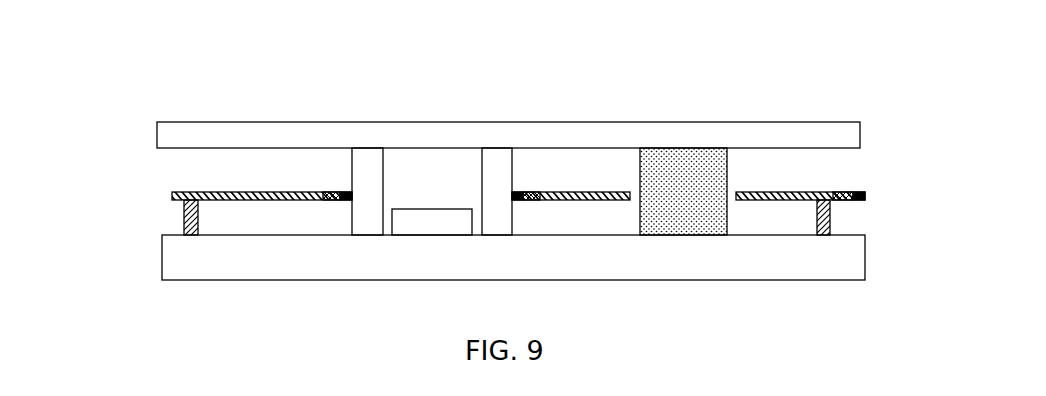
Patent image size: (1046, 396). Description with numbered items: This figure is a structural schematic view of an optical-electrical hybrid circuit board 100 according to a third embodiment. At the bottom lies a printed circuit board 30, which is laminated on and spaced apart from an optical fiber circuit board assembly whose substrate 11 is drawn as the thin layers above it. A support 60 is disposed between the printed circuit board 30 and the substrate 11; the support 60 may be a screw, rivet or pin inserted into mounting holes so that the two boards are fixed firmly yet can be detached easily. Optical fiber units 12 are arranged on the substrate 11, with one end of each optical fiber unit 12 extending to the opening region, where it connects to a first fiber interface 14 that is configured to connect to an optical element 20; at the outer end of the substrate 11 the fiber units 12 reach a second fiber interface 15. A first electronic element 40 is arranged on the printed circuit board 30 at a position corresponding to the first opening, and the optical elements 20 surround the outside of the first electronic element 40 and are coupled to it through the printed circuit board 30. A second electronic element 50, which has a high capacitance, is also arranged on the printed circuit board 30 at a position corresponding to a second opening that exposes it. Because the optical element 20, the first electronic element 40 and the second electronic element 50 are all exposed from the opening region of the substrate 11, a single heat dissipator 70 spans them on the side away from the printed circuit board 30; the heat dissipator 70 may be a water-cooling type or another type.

The optical-electrical hybrid circuit board 100 is at (127, 89).
The substrate 11 is at (210, 192).
The optical fiber unit 12 is at (330, 191).
The first fiber interface 14 is at (345, 191).
The second fiber interface 15 is at (860, 190).
The optical element 20 is at (498, 170).
The printed circuit board 30 is at (217, 262).
The first electronic element 40 is at (415, 215).
The second electronic element 50 is at (677, 157).
The support 60 is at (183, 210).
The heat dissipator 70 is at (545, 130).